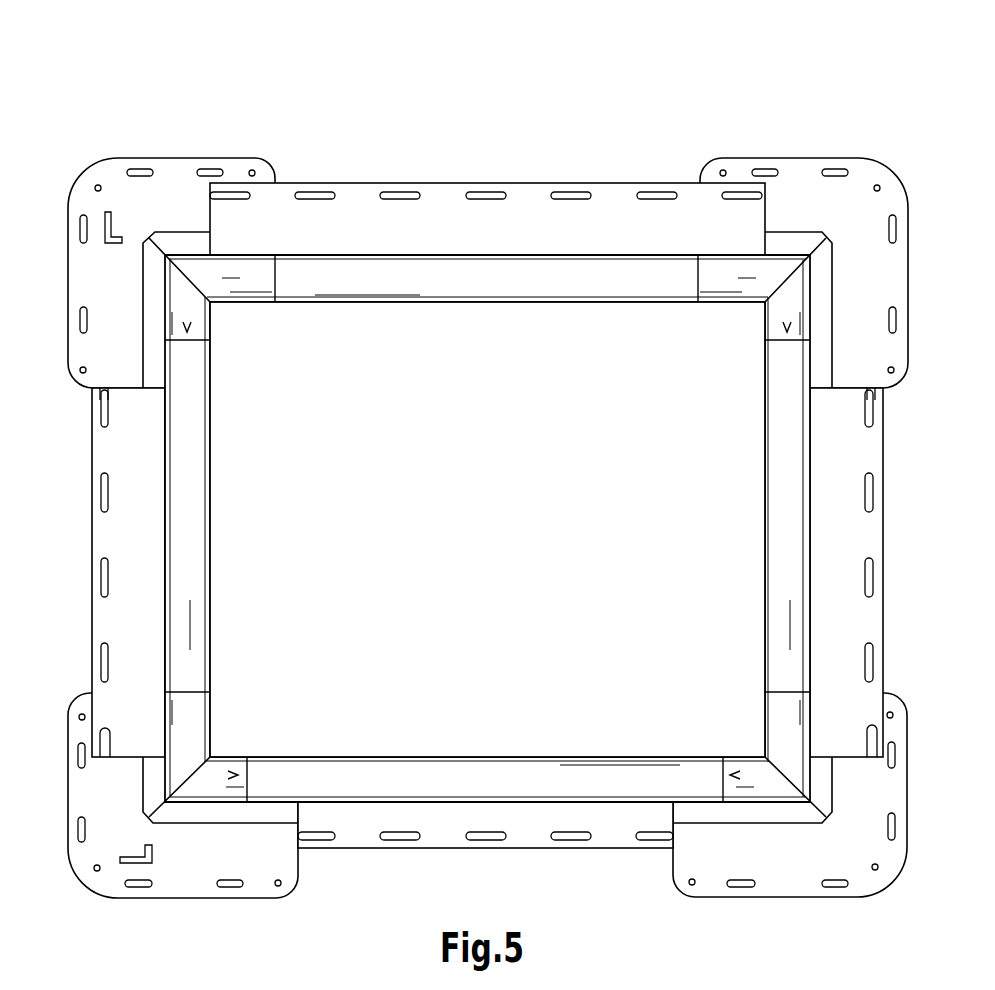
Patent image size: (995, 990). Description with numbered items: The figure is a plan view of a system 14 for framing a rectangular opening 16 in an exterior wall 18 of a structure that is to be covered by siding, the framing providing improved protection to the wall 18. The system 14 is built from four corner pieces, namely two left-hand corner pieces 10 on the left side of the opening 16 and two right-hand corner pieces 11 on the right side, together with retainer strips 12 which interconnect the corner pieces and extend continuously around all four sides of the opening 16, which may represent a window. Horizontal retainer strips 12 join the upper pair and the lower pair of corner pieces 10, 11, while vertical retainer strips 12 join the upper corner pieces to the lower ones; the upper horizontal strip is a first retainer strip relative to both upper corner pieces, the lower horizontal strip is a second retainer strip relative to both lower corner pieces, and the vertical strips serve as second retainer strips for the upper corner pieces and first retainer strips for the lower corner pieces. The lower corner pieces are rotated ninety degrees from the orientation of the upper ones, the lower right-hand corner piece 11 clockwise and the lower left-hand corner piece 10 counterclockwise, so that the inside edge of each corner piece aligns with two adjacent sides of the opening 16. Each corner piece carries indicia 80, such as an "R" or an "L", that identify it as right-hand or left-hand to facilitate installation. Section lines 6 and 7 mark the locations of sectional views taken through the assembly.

The section line 6- 6 is at (262, 152).
The section line 7- 7 is at (53, 360).
The left-hand corner piece 10 is at (162, 150).
The right-hand corner piece 11 is at (767, 143).
The retainer strip 12 is at (92, 552).
The system 14 is at (469, 484).
The opening 16 is at (498, 521).
The exterior wall 18 is at (507, 146).
The indicia 80 is at (150, 852).